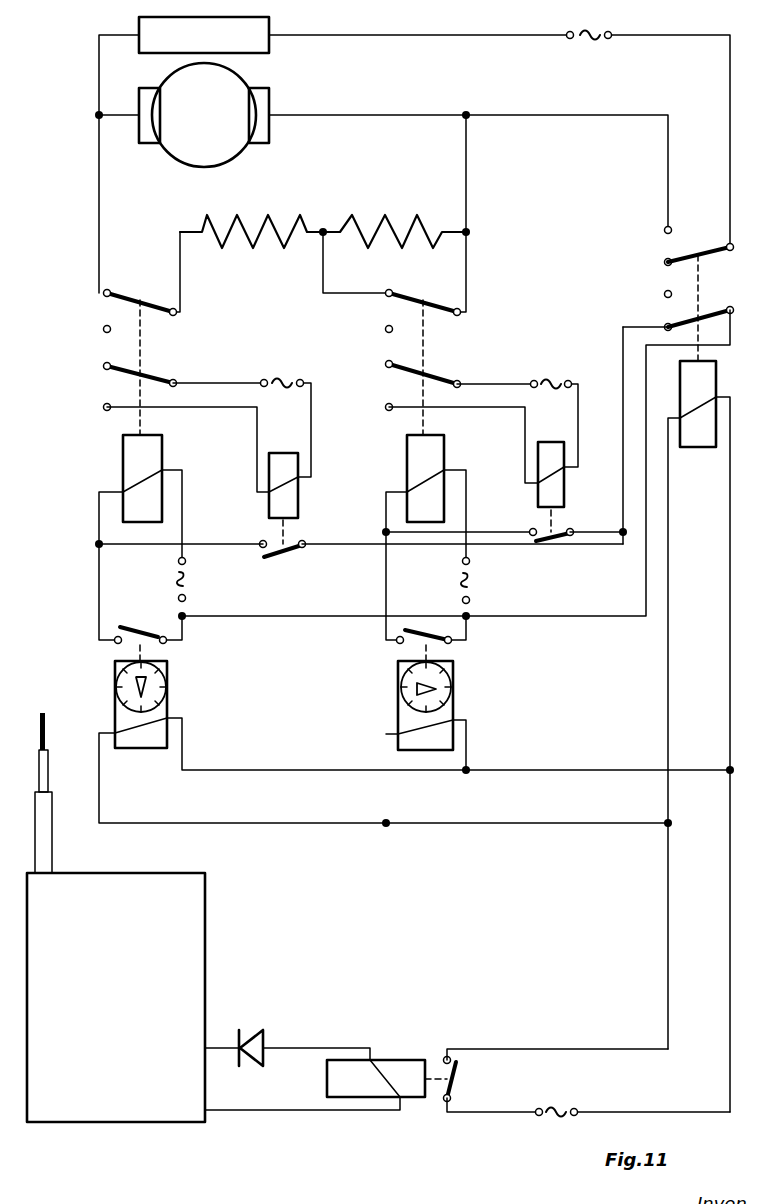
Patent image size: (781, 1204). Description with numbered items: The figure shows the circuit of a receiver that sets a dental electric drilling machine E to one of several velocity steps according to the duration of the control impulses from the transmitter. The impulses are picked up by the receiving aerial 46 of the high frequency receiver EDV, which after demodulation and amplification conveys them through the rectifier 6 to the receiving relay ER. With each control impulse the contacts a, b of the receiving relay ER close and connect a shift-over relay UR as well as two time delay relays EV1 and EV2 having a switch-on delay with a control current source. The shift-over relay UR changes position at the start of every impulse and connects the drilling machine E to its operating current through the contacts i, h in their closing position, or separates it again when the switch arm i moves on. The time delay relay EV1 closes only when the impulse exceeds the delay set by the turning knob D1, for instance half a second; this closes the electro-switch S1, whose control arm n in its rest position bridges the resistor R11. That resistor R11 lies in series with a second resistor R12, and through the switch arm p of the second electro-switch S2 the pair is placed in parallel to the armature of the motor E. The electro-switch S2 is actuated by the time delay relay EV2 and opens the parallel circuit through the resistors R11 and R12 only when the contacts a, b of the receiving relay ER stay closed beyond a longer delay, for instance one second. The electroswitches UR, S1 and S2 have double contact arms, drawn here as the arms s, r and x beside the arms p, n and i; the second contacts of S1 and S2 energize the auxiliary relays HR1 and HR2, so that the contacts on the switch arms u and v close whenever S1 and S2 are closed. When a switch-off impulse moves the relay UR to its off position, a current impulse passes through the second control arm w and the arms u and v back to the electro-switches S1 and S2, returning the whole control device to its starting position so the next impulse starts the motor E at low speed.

The electric drilling machine E is at (204, 115).
The second resistor R12 is at (251, 248).
The resistor R11 is at (394, 248).
The switch arm p is at (140, 297).
The switch contact s is at (140, 374).
The control arm n is at (423, 297).
The switch contact r is at (423, 372).
The contact h is at (676, 253).
The switch arm i is at (701, 259).
The switch contact x is at (666, 316).
The second control arm w is at (701, 307).
The shift-over relay UR is at (700, 432).
The second electro-switch S2 is at (137, 463).
The auxiliary relay HR2 is at (278, 498).
The electro-switch S1 is at (418, 460).
The auxiliary relay HR1 is at (550, 490).
The switch arm u is at (560, 536).
The switch arm v is at (283, 557).
The second time delay relay EV2 is at (123, 717).
The turning knob D1 is at (404, 680).
The first time delay relay EV1 is at (405, 722).
The receiving aerial 46 is at (44, 848).
The high frequency receiver EDV is at (116, 997).
The diode 6 is at (251, 1032).
The receiving relay ER is at (390, 1070).
The contact a is at (442, 1059).
The contact b is at (443, 1086).